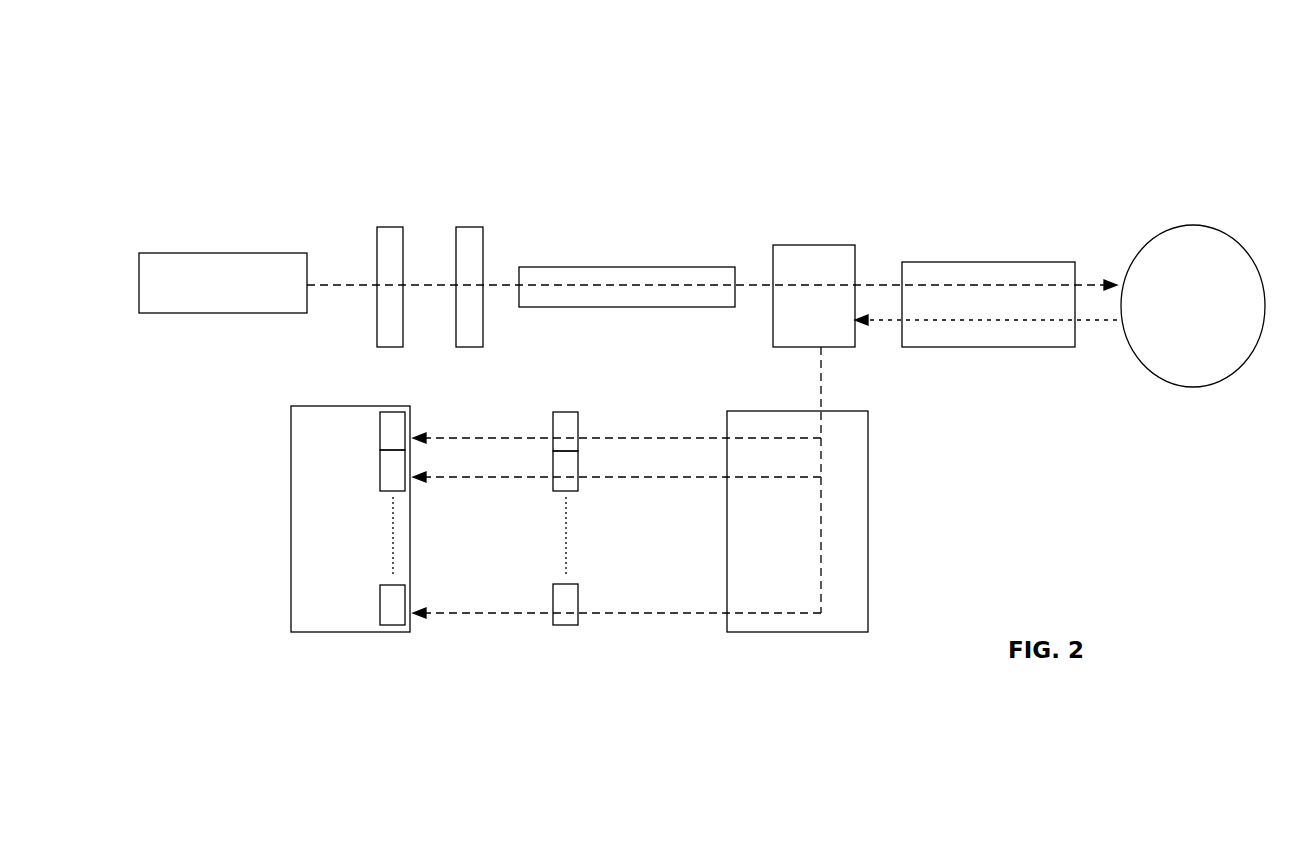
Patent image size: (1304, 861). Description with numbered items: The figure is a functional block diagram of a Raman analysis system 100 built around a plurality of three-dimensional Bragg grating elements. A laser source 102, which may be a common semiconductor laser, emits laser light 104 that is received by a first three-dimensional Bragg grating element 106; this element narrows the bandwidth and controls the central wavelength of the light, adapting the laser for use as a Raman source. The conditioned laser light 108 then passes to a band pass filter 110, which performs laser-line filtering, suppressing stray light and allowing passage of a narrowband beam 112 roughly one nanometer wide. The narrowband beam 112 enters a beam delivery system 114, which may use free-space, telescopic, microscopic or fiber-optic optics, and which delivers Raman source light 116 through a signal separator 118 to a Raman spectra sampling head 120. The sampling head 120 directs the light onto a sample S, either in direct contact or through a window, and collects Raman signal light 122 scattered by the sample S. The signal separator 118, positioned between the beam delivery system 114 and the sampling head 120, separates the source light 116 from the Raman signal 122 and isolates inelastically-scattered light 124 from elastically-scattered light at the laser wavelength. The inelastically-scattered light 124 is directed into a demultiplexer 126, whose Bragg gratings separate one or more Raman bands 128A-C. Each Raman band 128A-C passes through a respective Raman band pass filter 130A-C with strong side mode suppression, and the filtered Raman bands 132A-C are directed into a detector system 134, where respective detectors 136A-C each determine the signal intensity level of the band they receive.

The Raman analysis system 100 is at (633, 29).
The laser source 102 is at (218, 252).
The laser light 104 is at (347, 293).
The first three-dimensional Bragg grating element 106 is at (378, 238).
The conditioned laser light 108 is at (425, 280).
The band pass filter 110 is at (472, 214).
The narrowband beam 112 is at (503, 282).
The beam delivery system 114 is at (616, 265).
The Raman source light 116 is at (757, 282).
The signal separator 118 is at (822, 242).
The Raman spectra sampling head 120 is at (1012, 267).
The sample S is at (1233, 242).
The Raman signal light 122 is at (1013, 320).
The inelastically-scattered light 124 is at (823, 383).
The demultiplexer 126 is at (852, 477).
The Raman bands 128A-C is at (645, 442).
The Raman band pass filters 130A-C is at (569, 600).
The filtered Raman bands 132A-C is at (475, 442).
The detector system 134 is at (347, 632).
The detectors 136A-C is at (378, 600).